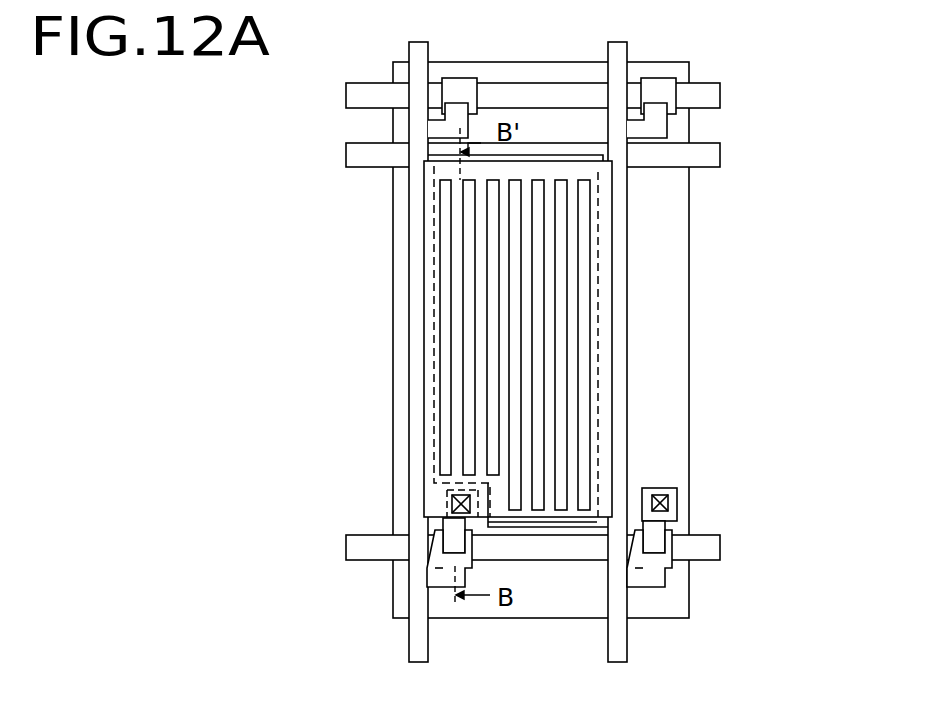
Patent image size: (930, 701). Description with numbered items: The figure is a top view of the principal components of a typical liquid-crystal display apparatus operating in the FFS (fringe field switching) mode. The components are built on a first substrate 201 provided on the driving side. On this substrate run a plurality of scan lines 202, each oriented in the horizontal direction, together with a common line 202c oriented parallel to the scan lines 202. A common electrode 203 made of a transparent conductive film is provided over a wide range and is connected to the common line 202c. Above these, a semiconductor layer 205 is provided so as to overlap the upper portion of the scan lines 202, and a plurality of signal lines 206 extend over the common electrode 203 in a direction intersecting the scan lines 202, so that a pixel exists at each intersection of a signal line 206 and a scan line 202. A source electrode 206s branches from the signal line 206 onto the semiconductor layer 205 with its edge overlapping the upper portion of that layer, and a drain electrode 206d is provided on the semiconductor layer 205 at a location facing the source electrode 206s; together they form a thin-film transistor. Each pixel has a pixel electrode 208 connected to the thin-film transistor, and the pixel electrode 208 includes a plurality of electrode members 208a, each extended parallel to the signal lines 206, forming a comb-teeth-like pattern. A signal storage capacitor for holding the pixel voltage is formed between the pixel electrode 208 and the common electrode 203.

The first substrate 201 is at (661, 62).
The scan lines 202 is at (722, 97).
The common line 202c is at (722, 153).
The common electrode 203 is at (598, 350).
The semiconductor layer 205 is at (672, 538).
The signal lines 206 is at (408, 662).
The drain electrode 206d is at (668, 487).
The source electrode 206s is at (663, 588).
The pixel electrode 208 is at (612, 280).
The electrode members 208a is at (498, 257).